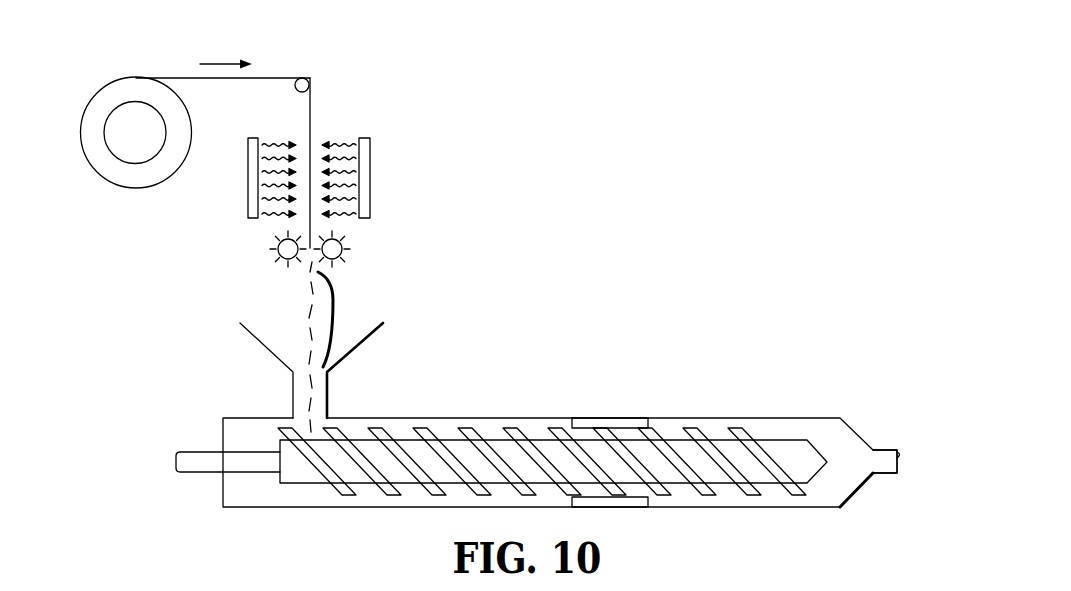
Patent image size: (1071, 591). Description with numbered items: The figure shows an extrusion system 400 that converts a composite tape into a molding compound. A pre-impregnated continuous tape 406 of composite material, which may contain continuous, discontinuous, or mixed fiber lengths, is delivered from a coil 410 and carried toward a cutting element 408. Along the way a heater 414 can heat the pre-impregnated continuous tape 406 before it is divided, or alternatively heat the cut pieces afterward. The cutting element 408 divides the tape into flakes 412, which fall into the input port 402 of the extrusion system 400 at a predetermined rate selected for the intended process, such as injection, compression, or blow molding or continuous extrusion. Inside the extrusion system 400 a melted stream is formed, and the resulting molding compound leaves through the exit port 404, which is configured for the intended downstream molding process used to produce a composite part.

The extrusion system 400 is at (110, 486).
The input port 402 is at (267, 350).
The exit port 404 is at (882, 452).
The pre-impregnated continuous tape 406 is at (283, 77).
The cutting element 408 is at (350, 248).
The coil 410 is at (120, 186).
The flakes 412 is at (333, 317).
The heater 414 is at (247, 178).